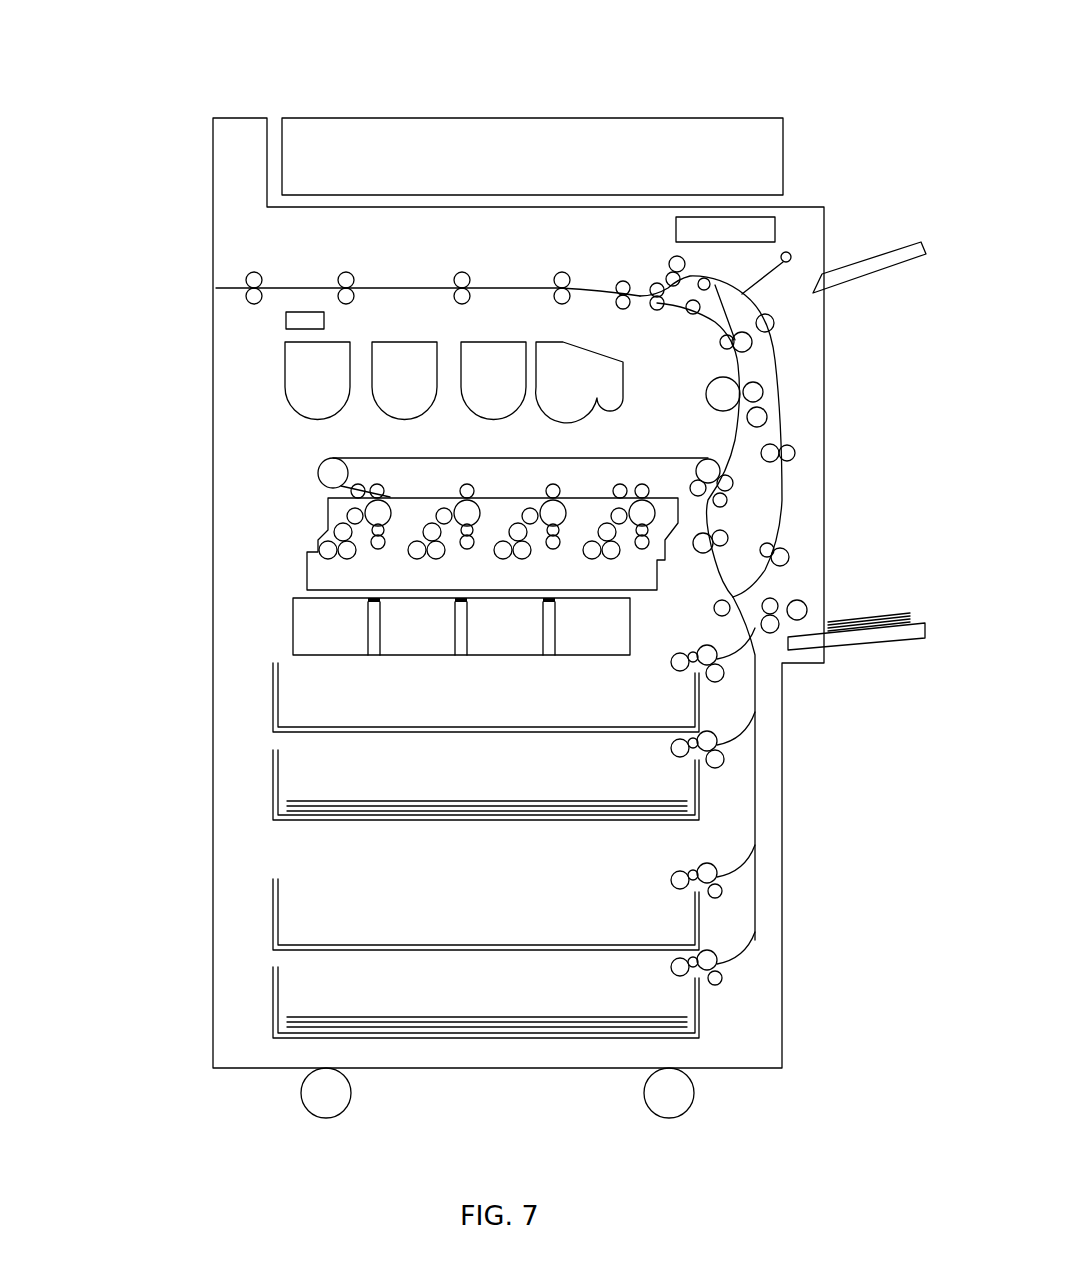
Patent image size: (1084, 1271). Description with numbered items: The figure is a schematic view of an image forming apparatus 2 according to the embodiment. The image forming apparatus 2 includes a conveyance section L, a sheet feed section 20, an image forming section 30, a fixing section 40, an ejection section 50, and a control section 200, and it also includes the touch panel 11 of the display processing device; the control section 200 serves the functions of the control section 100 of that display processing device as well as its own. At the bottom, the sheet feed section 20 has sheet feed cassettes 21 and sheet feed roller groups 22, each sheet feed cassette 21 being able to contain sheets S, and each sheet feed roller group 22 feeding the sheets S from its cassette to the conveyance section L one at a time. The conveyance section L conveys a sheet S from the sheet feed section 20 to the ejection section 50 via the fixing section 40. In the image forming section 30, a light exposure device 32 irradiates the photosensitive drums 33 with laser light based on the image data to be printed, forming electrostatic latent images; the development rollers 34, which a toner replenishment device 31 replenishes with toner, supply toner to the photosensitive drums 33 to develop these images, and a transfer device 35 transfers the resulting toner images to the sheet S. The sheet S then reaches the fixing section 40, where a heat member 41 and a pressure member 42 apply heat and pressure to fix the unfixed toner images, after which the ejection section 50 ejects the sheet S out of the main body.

The image forming apparatus 2 is at (737, 88).
The touch panel 11 is at (676, 226).
The ejection section 50 is at (232, 272).
The control section 200 is at (208, 330).
The control section 100 is at (286, 320).
The conveyance section L is at (298, 282).
The fixing section 40 is at (769, 376).
The heat member 41 is at (712, 397).
The pressure member 42 is at (757, 392).
The image forming section 30 is at (409, 500).
The toner replenishment device 31 is at (275, 392).
The transfer device 35 is at (308, 477).
The development rollers 34 is at (480, 537).
The photosensitive drums 33 is at (387, 524).
The light exposure device 32 is at (300, 618).
The sheet feed section 20 is at (454, 884).
The sheet feed cassettes 21 is at (270, 762).
The sheet S is at (287, 801).
The sheet feed roller groups 22 is at (708, 777).